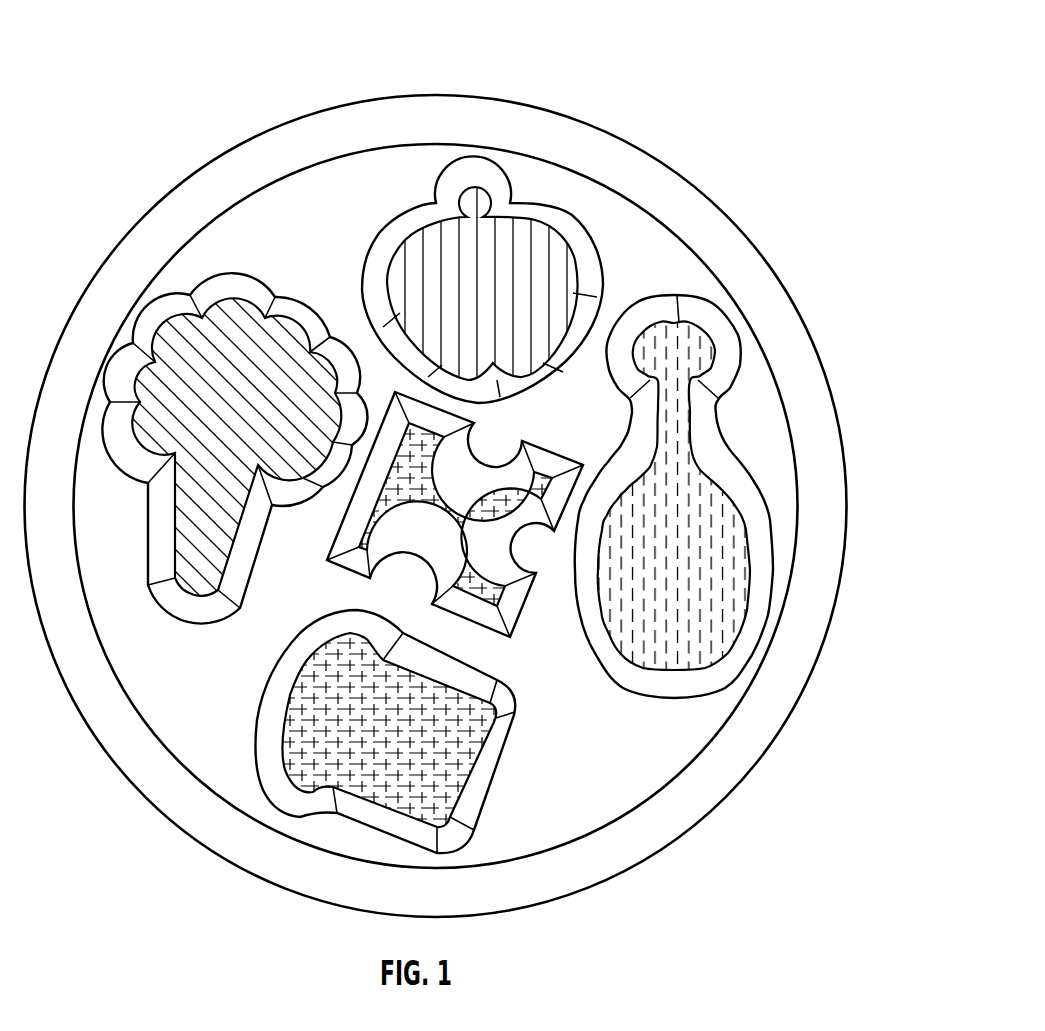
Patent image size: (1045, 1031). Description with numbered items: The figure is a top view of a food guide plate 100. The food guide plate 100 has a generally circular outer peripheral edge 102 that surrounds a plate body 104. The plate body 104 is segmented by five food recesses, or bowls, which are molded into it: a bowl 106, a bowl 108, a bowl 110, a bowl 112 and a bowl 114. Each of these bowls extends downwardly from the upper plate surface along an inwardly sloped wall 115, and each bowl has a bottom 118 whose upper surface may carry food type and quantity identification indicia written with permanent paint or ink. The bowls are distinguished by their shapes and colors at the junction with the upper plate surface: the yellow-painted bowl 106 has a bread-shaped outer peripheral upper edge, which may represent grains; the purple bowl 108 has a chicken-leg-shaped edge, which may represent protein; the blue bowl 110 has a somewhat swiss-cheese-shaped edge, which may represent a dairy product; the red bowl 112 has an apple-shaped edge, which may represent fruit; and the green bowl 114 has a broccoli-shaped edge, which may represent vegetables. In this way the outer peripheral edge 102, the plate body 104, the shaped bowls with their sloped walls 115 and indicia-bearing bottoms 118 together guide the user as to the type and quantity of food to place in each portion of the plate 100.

The food guide plate 100 is at (690, 45).
The outer peripheral edge 102 is at (693, 185).
The plate body 104 is at (348, 182).
The bowl 106 is at (450, 797).
The bowl 108 is at (703, 493).
The bowl 110 is at (390, 407).
The bowl 112 is at (517, 267).
The bowl 114 is at (185, 550).
The inwardly sloped wall 115 is at (598, 272).
The bottom 118 is at (239, 419).